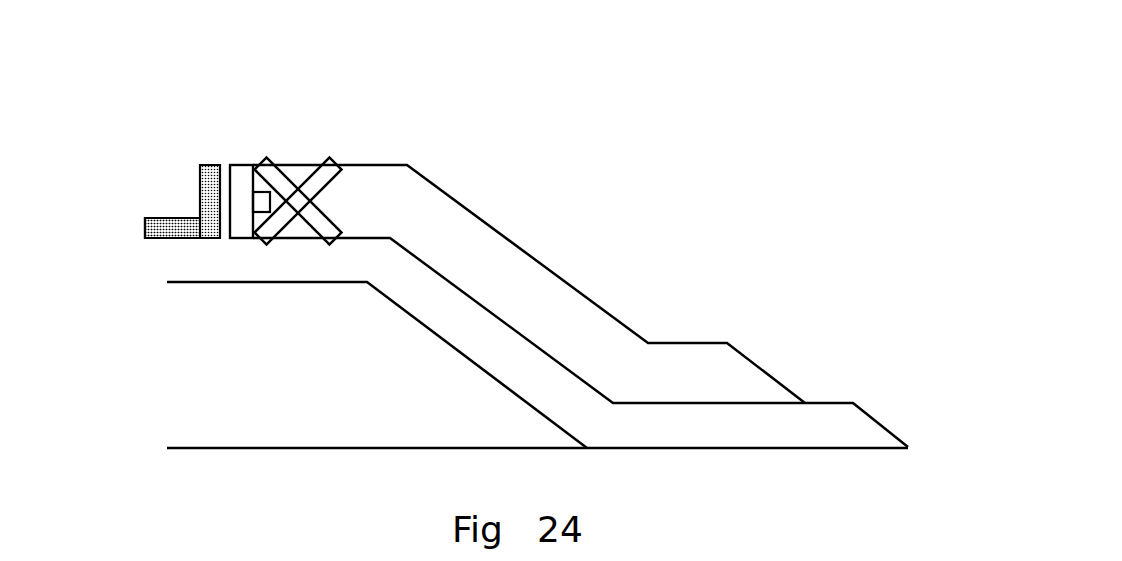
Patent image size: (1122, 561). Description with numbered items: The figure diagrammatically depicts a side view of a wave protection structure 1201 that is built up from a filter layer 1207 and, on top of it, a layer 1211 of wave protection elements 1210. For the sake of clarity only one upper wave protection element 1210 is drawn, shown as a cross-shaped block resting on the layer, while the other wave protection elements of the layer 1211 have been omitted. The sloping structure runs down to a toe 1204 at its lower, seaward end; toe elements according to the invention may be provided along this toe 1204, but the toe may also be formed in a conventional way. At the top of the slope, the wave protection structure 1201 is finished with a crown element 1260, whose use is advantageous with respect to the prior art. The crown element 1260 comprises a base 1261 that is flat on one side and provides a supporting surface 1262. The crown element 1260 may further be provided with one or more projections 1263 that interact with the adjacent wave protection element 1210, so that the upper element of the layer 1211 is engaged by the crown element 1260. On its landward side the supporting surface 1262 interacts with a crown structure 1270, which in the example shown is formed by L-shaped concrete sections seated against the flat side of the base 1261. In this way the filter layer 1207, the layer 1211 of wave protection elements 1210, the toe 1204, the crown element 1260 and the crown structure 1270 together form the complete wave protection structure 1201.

The wave protection structure 1201 is at (543, 115).
The toe 1204 is at (668, 315).
The filter layer 1207 is at (495, 362).
The wave protection element 1210 is at (300, 172).
The layer of wave protection elements 1211 is at (518, 275).
The crown element 1260 is at (240, 156).
The base 1261 is at (240, 233).
The supporting surface 1262 is at (228, 203).
The projection 1263 is at (258, 193).
The crown structure 1270 is at (145, 237).